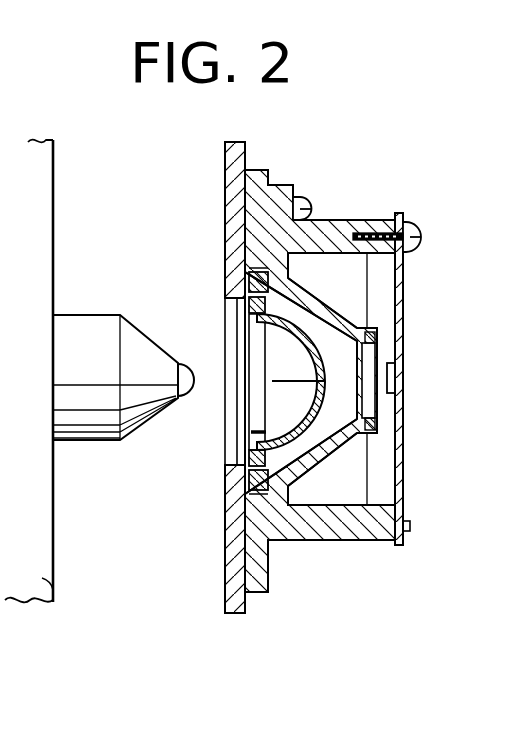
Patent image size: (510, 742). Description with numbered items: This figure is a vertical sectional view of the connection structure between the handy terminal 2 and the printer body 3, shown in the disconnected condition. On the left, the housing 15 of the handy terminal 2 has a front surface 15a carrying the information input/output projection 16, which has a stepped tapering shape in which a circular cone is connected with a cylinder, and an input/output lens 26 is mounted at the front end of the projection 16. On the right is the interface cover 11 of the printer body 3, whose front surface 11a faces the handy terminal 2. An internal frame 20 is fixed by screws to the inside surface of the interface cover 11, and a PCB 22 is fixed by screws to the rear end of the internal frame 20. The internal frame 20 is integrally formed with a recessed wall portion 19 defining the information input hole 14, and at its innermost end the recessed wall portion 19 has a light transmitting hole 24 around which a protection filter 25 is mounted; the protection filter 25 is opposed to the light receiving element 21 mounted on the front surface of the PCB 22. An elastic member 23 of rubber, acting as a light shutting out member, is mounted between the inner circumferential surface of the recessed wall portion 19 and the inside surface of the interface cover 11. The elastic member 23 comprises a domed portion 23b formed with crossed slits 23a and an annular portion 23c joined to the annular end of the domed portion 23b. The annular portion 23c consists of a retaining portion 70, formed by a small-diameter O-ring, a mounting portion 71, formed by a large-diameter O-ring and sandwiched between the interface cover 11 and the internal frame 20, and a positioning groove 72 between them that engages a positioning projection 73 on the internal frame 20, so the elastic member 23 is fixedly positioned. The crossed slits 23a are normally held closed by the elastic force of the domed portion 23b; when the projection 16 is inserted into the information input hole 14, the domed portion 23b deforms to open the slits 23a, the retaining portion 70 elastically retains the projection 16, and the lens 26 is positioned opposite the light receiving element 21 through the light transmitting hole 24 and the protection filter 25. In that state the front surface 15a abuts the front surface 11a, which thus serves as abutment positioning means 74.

The handy terminal 2 is at (38, 197).
The printer body 3 is at (228, 158).
The interface cover 11 is at (242, 600).
The front surface of the interface cover 11a is at (229, 570).
The information input hole 14 is at (272, 412).
The housing 15 is at (56, 590).
The front surface of the housing 15a is at (55, 568).
The information input/output projection 16 is at (100, 417).
The recessed wall portion 19 is at (329, 322).
The internal frame 20 is at (256, 176).
The light receiving element 21 is at (398, 378).
The PCB 22 is at (405, 266).
The elastic member 23 is at (286, 513).
The crossed slits 23a is at (352, 442).
The domed portion 23b is at (327, 392).
The annular portion 23c is at (262, 433).
The light transmitting hole 24 is at (380, 362).
The protection filter 25 is at (380, 400).
The input/output lens 26 is at (184, 366).
The retaining portion 70 is at (250, 303).
The mounting portion 71 is at (250, 282).
The positioning groove 72 is at (250, 290).
The positioning projection 73 is at (279, 262).
The abutment positioning means 74 is at (55, 537).